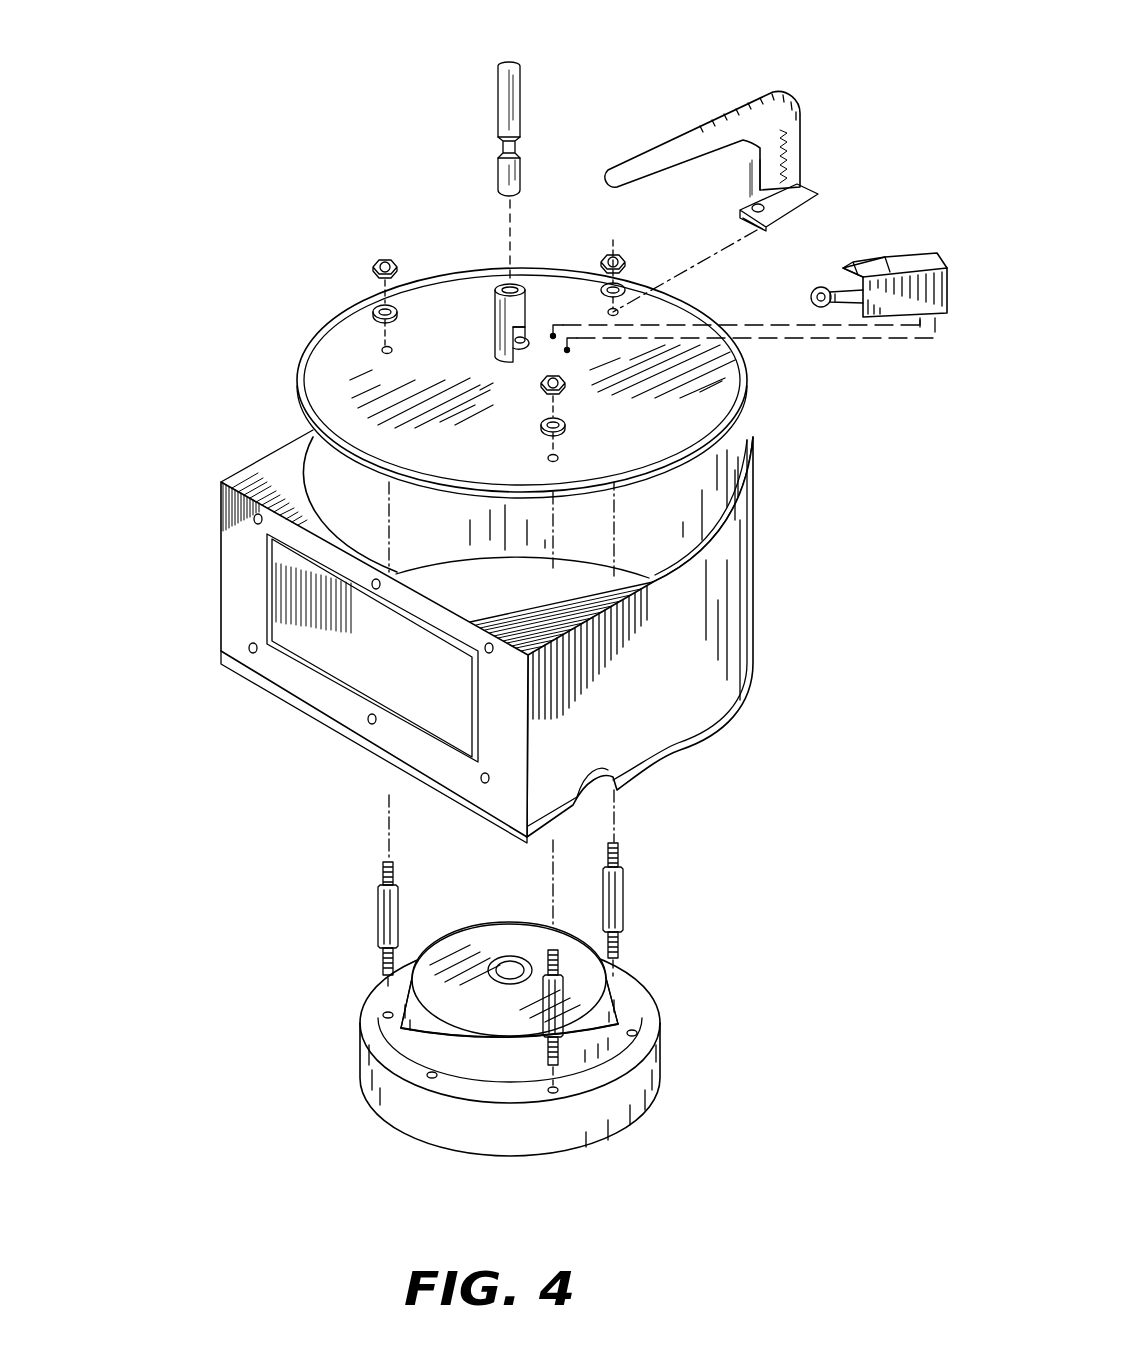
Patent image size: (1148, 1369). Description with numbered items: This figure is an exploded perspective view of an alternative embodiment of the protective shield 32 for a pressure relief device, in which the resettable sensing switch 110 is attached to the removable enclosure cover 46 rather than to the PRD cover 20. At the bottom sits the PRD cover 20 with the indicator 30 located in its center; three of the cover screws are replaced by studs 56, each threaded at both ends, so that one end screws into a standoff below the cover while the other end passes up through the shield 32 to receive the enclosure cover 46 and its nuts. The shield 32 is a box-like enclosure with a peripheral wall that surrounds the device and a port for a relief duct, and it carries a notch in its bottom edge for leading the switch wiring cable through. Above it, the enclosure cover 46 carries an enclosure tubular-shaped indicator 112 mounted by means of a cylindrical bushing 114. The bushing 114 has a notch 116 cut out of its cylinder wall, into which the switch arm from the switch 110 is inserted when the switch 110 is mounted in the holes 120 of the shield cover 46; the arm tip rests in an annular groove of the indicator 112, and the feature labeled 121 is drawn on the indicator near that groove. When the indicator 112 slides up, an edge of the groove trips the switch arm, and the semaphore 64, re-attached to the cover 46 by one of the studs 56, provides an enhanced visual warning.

The PRD cover 20 is at (554, 1017).
The indicator 30 is at (510, 958).
The shield 32 is at (246, 392).
The enclosure cover 46 is at (725, 372).
The studs 56 is at (388, 920).
The semaphore 64 is at (765, 95).
The resettable sensing switch 110 is at (915, 262).
The enclosure tubular-shaped indicator 112 is at (509, 170).
The cylindrical bushing 114 is at (478, 334).
The notch 116 is at (521, 338).
The holes 120 is at (553, 334).
The groove 121 is at (518, 148).